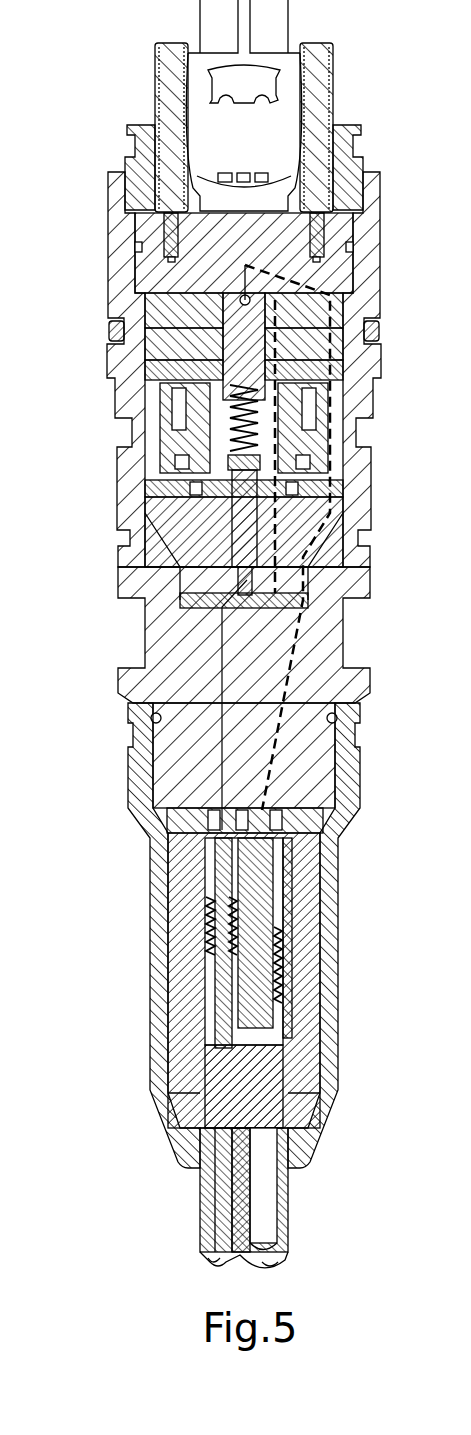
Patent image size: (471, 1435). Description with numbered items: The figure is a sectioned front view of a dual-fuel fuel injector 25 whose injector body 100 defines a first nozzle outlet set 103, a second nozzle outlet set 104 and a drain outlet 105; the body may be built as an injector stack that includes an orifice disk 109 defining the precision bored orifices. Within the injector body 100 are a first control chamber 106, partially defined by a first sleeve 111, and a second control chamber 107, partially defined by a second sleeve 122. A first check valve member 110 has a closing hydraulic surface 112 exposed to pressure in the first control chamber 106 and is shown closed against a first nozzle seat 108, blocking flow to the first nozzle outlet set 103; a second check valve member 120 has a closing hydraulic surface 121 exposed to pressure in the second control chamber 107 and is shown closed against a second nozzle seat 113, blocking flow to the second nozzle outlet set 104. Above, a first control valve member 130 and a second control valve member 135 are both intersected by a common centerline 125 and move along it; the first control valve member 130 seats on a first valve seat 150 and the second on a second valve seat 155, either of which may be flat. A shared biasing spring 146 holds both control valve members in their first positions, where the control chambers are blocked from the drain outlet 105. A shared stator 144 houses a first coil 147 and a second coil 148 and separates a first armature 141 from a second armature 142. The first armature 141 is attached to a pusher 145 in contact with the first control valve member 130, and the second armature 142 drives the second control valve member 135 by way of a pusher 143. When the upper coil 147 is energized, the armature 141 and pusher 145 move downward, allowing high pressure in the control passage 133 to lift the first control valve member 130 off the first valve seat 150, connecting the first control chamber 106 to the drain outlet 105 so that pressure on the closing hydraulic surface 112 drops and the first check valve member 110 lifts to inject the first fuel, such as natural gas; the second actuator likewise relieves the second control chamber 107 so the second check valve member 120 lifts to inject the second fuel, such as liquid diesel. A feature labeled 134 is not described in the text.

The fuel injector 25 is at (356, 70).
The injector body 100 is at (108, 262).
The drain outlet 105 is at (383, 290).
The first control valve member 130 is at (118, 333).
The first valve seat 150 is at (320, 330).
The first armature 141 is at (190, 385).
The common centerline 125 is at (180, 395).
The pusher 145 is at (312, 390).
The first coil 147 is at (308, 410).
The shared stator 144 is at (182, 442).
The shared biasing spring 146 is at (183, 467).
The second control valve member 135 is at (240, 578).
The second coil 148 is at (190, 490).
The second armature 142 is at (337, 485).
The pusher 143 is at (223, 532).
The second valve seat 155 is at (303, 572).
The control passage 133 is at (307, 288).
The injector body 134 is at (217, 625).
The orifice disk 109 is at (180, 828).
The closing hydraulic surface 121 is at (177, 812).
The closing hydraulic surface 112 is at (323, 812).
The first control chamber 106 is at (287, 863).
The second control chamber 107 is at (213, 843).
The second sleeve 122 is at (207, 888).
The second check valve member 120 is at (207, 967).
The first sleeve 111 is at (287, 878).
The first check valve member 110 is at (263, 917).
The first nozzle seat 108 is at (263, 1243).
The second nozzle seat 113 is at (218, 1250).
The second nozzle outlet set 104 is at (210, 1265).
The first nozzle outlet set 103 is at (273, 1262).